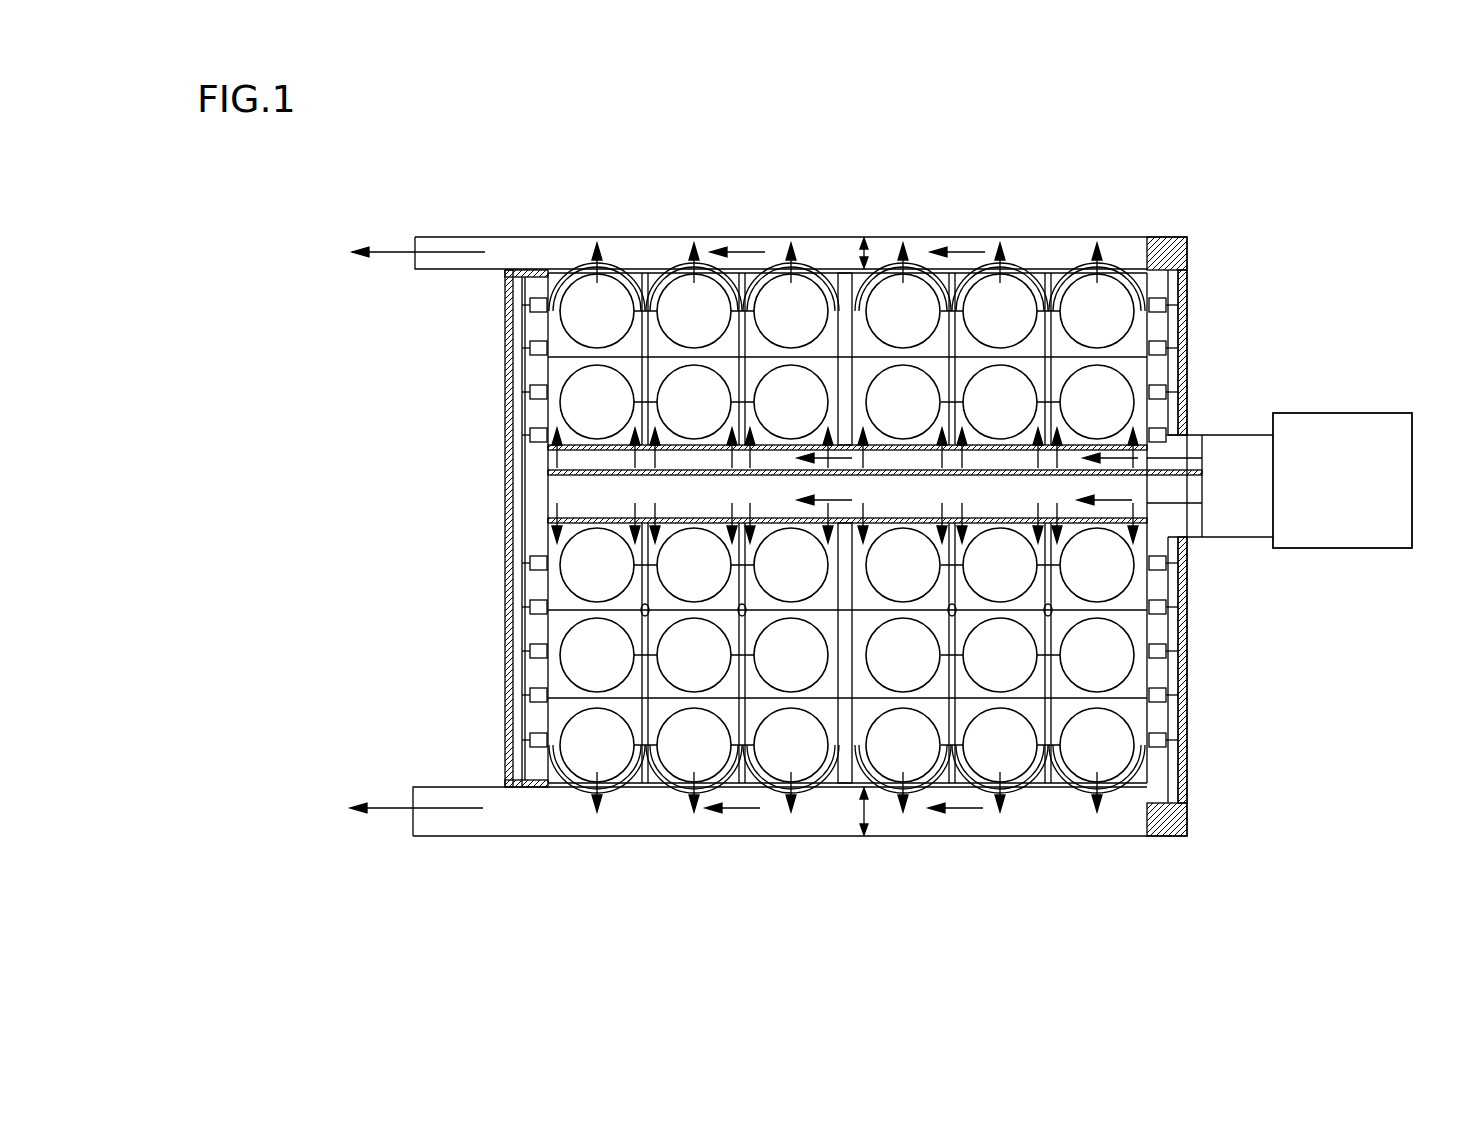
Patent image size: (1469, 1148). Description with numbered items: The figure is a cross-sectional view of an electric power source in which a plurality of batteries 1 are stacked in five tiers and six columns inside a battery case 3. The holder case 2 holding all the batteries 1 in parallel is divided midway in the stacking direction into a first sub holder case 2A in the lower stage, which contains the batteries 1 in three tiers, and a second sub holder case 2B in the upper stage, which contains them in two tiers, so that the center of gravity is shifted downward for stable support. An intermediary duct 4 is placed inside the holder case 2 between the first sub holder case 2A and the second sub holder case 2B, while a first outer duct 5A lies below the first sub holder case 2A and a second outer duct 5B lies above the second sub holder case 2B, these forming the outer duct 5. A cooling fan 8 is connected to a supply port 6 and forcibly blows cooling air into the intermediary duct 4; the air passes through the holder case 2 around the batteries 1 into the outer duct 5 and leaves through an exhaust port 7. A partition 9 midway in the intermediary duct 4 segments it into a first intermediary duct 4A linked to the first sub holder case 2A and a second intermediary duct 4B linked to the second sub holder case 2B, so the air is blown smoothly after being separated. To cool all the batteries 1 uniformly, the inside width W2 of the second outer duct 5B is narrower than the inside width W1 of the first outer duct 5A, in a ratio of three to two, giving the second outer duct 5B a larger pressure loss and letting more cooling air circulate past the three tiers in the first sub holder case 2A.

The battery 1 is at (667, 283).
The holder case 2 is at (787, 544).
The first sub holder case 2A is at (482, 518).
The second sub holder case 2B is at (482, 285).
The battery case 3 is at (1155, 193).
The intermediary duct 4 is at (1003, 593).
The first intermediary duct 4A is at (978, 504).
The second intermediary duct 4B is at (994, 464).
The outer duct 5 is at (637, 525).
The first outer duct 5A is at (470, 797).
The second outer duct 5B is at (444, 257).
The supply port 6 is at (1204, 450).
The exhaust port 7 is at (415, 525).
The cooling fan 8 is at (1345, 413).
The partition 9 is at (852, 478).
The inside width of first outer duct W1 is at (867, 835).
The inside width of second outer duct W2 is at (866, 256).